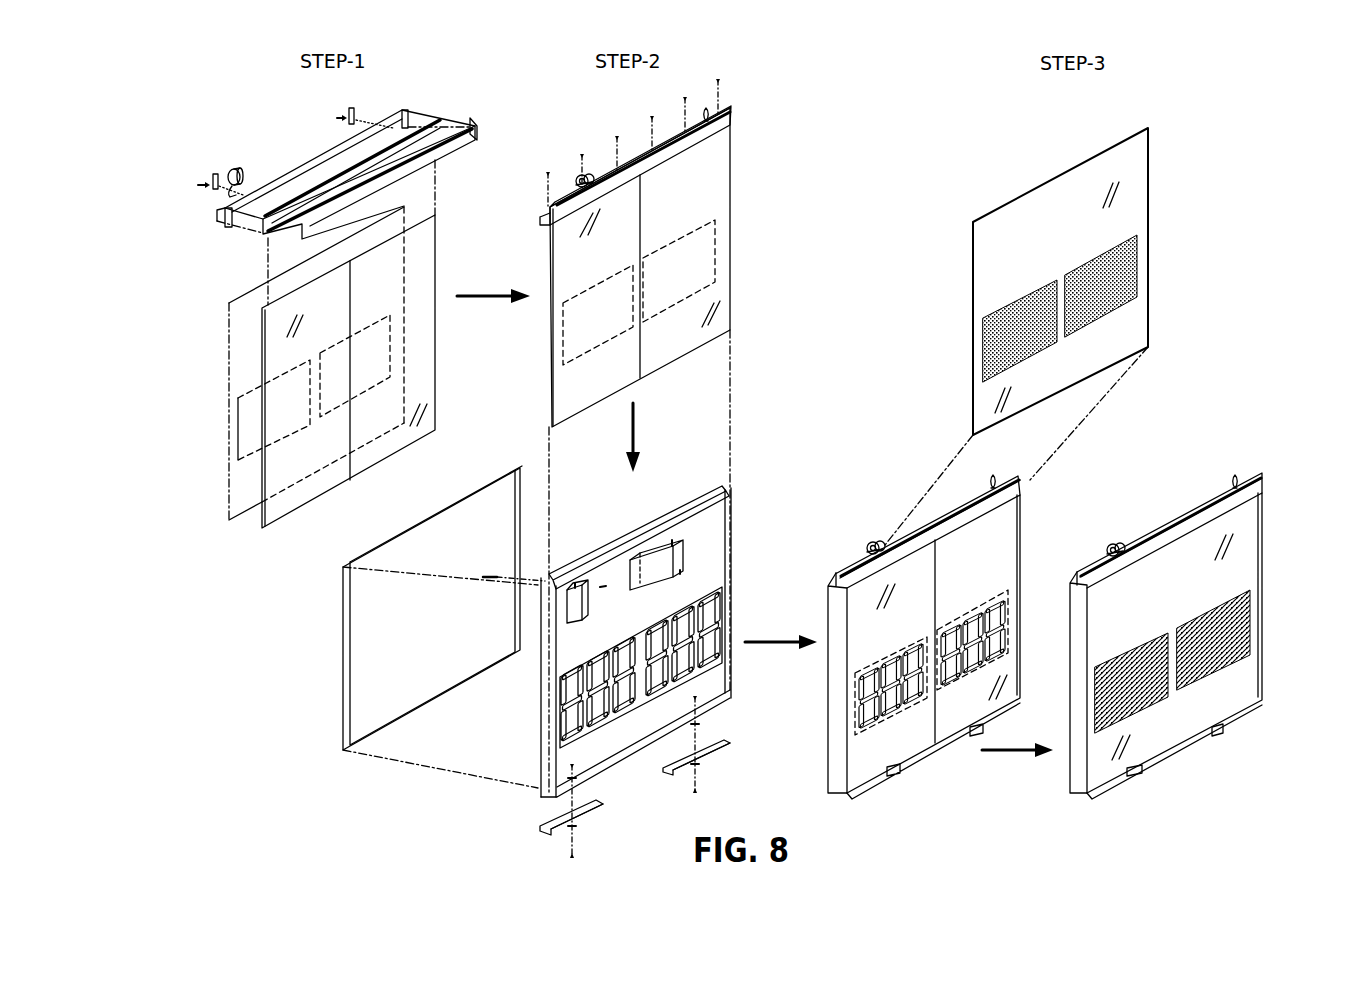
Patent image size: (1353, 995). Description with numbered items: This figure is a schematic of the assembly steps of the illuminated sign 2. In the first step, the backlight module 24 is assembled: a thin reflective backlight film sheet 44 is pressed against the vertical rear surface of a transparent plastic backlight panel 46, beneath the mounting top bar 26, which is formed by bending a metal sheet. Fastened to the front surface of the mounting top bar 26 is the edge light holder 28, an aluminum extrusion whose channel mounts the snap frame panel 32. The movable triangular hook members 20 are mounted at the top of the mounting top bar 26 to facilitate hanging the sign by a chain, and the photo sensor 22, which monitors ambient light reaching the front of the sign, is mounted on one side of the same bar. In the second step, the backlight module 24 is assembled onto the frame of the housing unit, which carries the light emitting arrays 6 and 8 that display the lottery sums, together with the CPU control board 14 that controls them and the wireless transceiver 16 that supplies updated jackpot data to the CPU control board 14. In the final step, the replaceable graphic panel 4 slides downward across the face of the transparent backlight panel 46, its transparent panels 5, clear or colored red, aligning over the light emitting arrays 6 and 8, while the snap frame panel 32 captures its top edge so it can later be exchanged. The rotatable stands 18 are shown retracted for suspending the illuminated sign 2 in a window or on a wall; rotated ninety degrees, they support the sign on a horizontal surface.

The illuminated sign 2 is at (1292, 594).
The graphic panel 4 is at (1135, 195).
The transparent panels 5 is at (1133, 278).
The light emitting array 6 is at (605, 656).
The light emitting array 8 is at (681, 612).
The CPU control board 14 is at (648, 552).
The wireless transceiver 16 is at (585, 580).
The rotatable stands 18 is at (588, 800).
The movable triangular hook members 20 is at (215, 175).
The photo sensor 22 is at (232, 167).
The backlight module 24 is at (479, 106).
The mounting top bar 26 is at (287, 184).
The edge light holder 28 is at (423, 125).
The snap frame panel 32 is at (478, 138).
The reflective backlight film sheet 44 is at (240, 505).
The transparent plastic backlight panel 46 is at (292, 505).